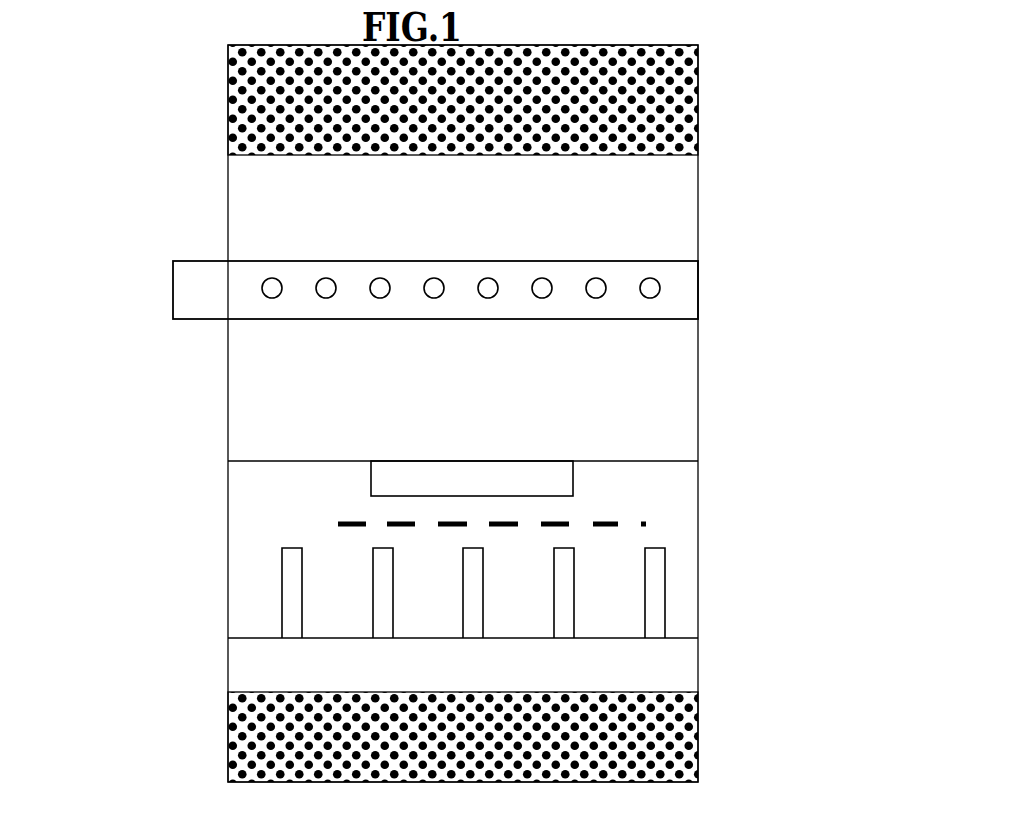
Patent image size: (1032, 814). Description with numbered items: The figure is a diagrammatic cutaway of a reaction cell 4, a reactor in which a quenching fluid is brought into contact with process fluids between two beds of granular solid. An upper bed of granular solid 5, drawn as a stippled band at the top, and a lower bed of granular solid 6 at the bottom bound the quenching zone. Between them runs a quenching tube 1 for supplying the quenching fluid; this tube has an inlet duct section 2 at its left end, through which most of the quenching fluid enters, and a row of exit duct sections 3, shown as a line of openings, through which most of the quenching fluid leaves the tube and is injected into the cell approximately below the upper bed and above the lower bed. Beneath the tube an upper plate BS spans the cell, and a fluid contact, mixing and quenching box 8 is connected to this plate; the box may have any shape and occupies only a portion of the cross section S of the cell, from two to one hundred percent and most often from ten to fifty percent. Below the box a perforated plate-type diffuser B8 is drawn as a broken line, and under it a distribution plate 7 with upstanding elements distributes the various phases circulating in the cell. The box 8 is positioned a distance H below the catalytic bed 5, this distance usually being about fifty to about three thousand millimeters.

The quenching tube 1 is at (700, 277).
The inlet duct section 2 is at (173, 285).
The exit duct sections 3 is at (497, 296).
The cell 4 is at (610, 225).
The upper bed of granular solid 5 is at (700, 98).
The lower bed of granular solid 6 is at (703, 742).
The distribution plate 7 is at (658, 582).
The fluid contact, mixing and quenching box 8 is at (428, 478).
The upper plate BS is at (670, 461).
The perforated plate-type diffuser B8 is at (618, 521).
The distance between box and catalytic bed H is at (228, 151).
The cross section of the cell S is at (679, 399).